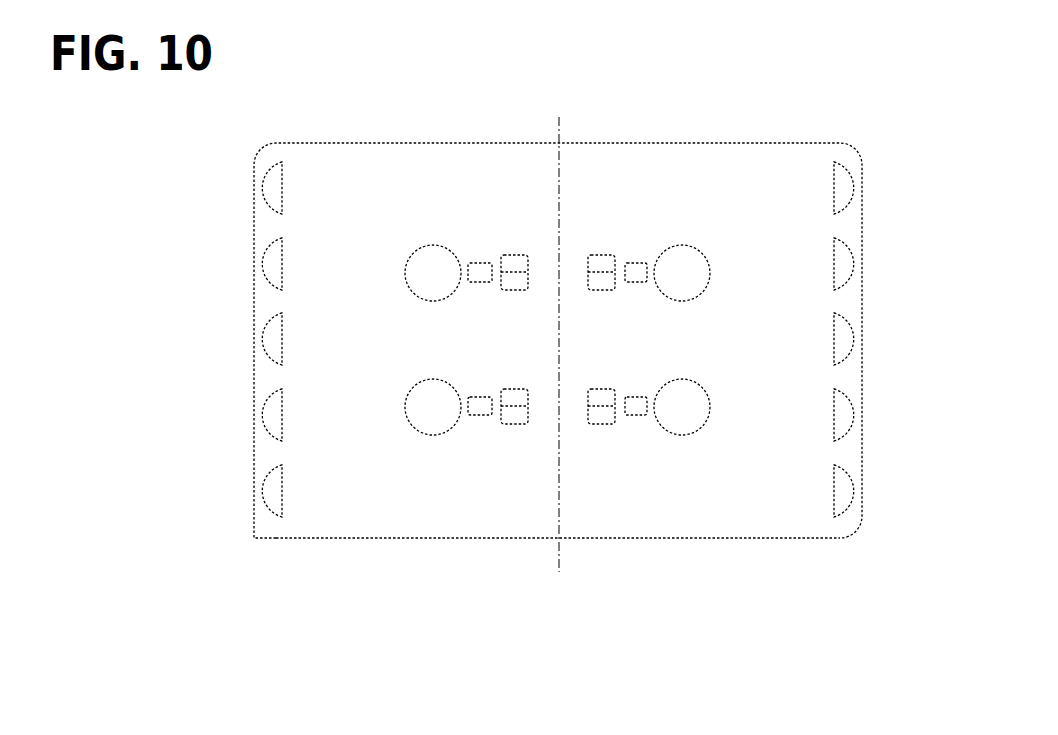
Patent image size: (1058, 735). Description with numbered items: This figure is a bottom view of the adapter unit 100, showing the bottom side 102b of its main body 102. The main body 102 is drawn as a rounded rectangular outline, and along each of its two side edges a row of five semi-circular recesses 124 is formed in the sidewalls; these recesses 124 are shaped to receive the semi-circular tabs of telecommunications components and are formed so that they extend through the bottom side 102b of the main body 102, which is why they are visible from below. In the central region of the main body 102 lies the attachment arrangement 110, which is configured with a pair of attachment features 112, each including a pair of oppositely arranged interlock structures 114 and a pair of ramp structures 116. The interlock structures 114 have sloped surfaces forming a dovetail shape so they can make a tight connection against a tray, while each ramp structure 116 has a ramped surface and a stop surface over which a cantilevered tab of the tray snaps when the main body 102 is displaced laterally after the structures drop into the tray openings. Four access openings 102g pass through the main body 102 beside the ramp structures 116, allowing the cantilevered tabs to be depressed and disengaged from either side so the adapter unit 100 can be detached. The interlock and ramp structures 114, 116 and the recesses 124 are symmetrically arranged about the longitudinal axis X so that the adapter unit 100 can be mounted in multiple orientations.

The adapter unit 100 is at (229, 172).
The main body 102 is at (853, 455).
The bottom side 102b is at (808, 531).
The access openings 102g is at (433, 253).
The attachment arrangement 110 is at (545, 248).
The attachment features 112 is at (578, 243).
The interlock structures 114 is at (517, 258).
The ramp structures 116 is at (479, 269).
The recesses 124 is at (277, 272).